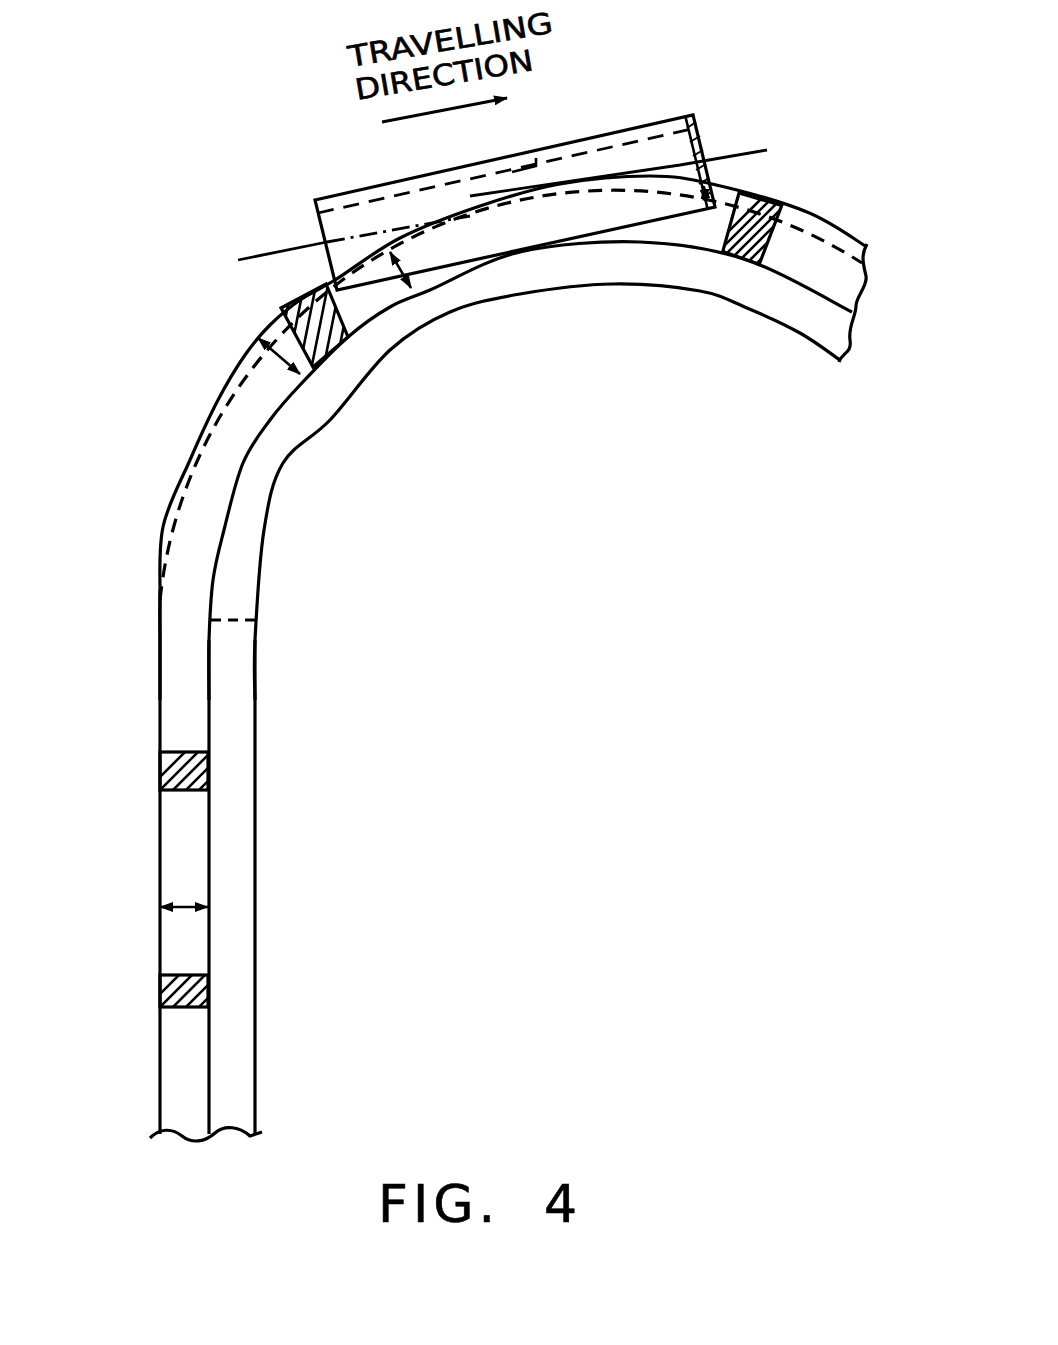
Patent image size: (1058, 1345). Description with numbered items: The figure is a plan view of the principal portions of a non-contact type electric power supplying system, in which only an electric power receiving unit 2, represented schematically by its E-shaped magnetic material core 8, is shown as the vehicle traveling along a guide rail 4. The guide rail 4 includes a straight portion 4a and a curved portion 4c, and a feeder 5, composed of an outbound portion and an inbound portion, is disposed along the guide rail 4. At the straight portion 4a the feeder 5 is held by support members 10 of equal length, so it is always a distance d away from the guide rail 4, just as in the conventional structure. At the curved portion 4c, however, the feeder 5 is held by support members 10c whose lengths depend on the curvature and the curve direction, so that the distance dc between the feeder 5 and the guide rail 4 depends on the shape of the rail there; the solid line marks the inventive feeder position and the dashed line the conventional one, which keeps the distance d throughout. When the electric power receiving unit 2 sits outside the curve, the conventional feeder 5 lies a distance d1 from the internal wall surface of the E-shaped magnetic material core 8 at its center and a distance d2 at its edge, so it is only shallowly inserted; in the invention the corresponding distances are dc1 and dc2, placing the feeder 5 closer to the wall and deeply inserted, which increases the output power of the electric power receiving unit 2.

The electric power receiving unit 2 is at (486, 202).
The E-shaped magnetic material core 8 is at (326, 197).
The guide rail 4 is at (508, 658).
The straight portion 4a is at (247, 942).
The curved portion 4c is at (337, 397).
The feeder 5 is at (158, 610).
The support members 10 is at (160, 781).
The support members 10c is at (292, 308).
The distance d is at (307, 570).
The distance dc is at (272, 370).
The distance d1 is at (520, 194).
The distance d2 is at (713, 152).
The distance dc1 is at (497, 183).
The distance dc2 is at (684, 117).